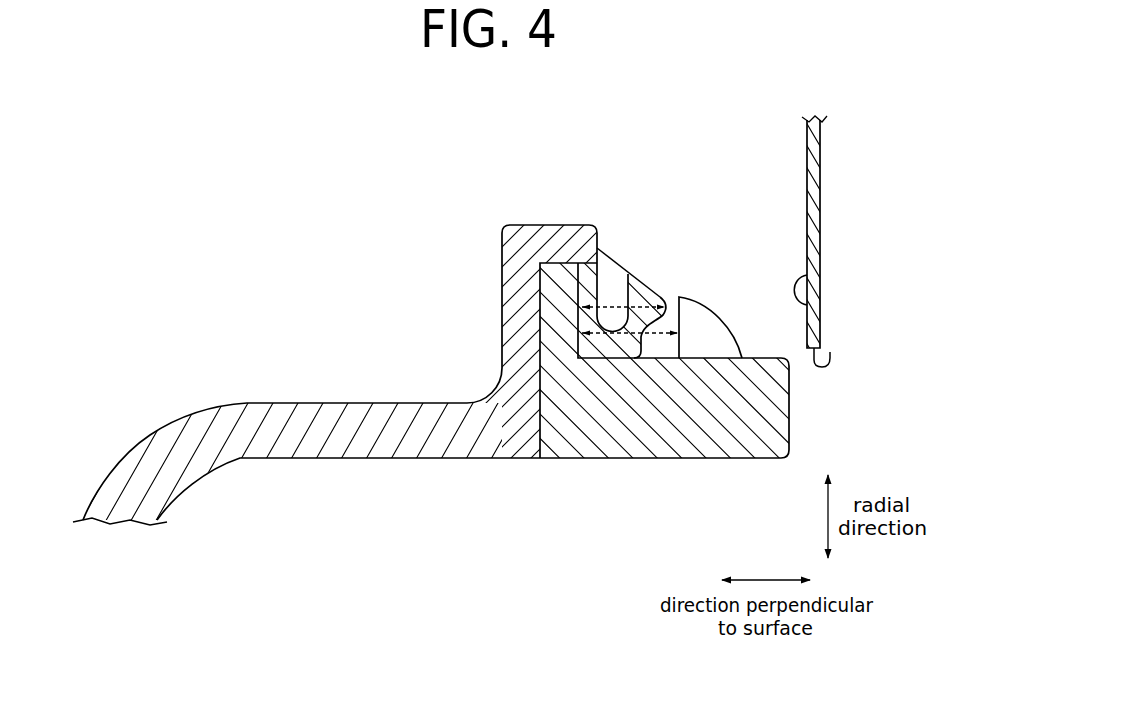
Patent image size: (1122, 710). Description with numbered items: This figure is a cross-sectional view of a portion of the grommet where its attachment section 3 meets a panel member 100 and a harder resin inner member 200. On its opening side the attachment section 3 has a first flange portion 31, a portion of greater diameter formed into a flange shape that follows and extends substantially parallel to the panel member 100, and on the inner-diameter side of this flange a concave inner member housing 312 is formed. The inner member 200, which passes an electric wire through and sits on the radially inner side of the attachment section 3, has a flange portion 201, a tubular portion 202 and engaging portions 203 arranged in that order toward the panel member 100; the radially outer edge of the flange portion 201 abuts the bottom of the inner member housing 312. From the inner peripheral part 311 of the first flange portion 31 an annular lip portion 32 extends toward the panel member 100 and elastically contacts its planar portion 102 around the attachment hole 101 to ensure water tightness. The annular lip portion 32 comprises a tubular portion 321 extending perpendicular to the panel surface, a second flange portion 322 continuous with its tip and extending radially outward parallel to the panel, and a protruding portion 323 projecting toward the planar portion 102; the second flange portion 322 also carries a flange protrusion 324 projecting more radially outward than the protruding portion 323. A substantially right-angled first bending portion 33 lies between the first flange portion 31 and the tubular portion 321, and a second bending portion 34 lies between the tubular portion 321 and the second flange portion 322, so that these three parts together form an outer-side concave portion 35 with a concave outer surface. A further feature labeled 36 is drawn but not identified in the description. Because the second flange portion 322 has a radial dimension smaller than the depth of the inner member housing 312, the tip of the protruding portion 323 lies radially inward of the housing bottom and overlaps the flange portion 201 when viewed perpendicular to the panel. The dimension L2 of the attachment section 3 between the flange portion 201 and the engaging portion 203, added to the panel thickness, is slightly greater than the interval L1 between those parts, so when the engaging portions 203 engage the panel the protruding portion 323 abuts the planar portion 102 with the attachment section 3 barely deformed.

The attachment section 3 is at (330, 402).
The first flange portion 31 is at (526, 224).
The inner peripheral part 311 is at (586, 238).
The inner member housing 312 is at (562, 266).
The annular lip portion 32 is at (646, 290).
The tubular portion 321 is at (618, 328).
The second flange portion 322 is at (656, 296).
The protruding portion 323 is at (650, 306).
The flange protrusion 324 is at (641, 272).
The first bending portion 33 is at (616, 262).
The second bending portion 34 is at (605, 358).
The outer-side concave portion 35 is at (636, 270).
The seal lip 36 is at (619, 290).
The panel member 100 is at (816, 172).
The attachment hole 101 is at (830, 352).
The planar portion 102 is at (810, 277).
The inner member 200 is at (662, 448).
The flange portion 201 is at (540, 305).
The tubular portion 202 is at (624, 432).
The engaging portions 203 is at (718, 335).
The interval L1 is at (612, 338).
The dimension L2 is at (665, 300).